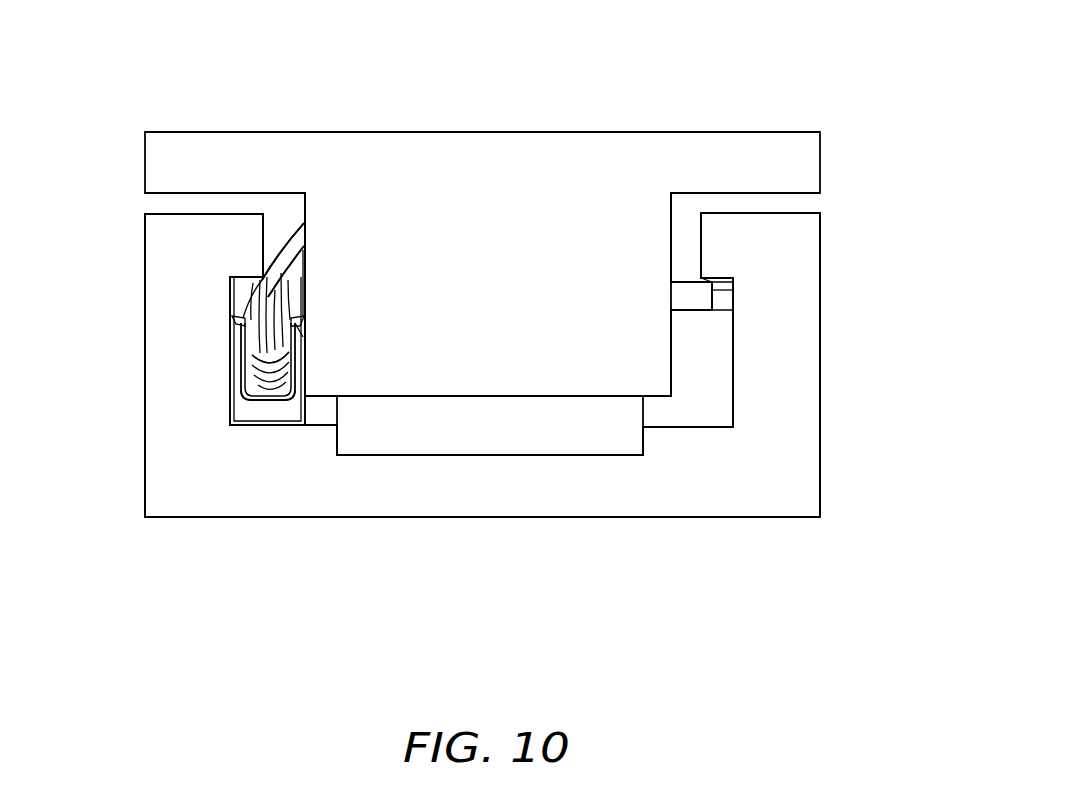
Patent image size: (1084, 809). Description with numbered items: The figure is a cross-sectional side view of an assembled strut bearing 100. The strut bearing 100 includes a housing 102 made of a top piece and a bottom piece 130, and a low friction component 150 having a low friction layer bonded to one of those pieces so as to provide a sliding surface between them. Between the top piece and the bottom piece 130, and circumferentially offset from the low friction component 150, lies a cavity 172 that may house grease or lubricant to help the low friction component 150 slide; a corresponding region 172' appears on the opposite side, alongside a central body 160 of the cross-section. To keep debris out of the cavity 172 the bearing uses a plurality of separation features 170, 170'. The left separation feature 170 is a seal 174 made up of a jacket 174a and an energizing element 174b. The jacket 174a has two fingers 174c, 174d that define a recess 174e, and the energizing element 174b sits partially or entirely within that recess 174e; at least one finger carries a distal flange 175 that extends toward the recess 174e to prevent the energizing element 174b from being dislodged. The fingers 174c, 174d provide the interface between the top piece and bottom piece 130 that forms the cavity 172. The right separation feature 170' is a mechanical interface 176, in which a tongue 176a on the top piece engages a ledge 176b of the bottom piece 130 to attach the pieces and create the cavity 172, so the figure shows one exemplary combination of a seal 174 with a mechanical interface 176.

The strut bearing 100 is at (858, 57).
The housing 102 is at (143, 164).
The bottom piece 130 is at (752, 483).
The low friction component 150 is at (449, 437).
The central body 160 is at (572, 150).
The separation feature 170 is at (177, 351).
The separation feature 170' is at (807, 303).
The cavity 172 is at (255, 398).
The right wall 172' is at (731, 397).
The seal 174 is at (232, 370).
The jacket 174a is at (232, 413).
The energizing element 174b is at (289, 243).
The finger 174c is at (232, 319).
The finger 174d is at (306, 312).
The recess 174e is at (272, 373).
The distal flange 175 is at (304, 338).
The mechanical interface 176 is at (712, 313).
The tongue 176a is at (715, 290).
The ledge 176b is at (708, 278).